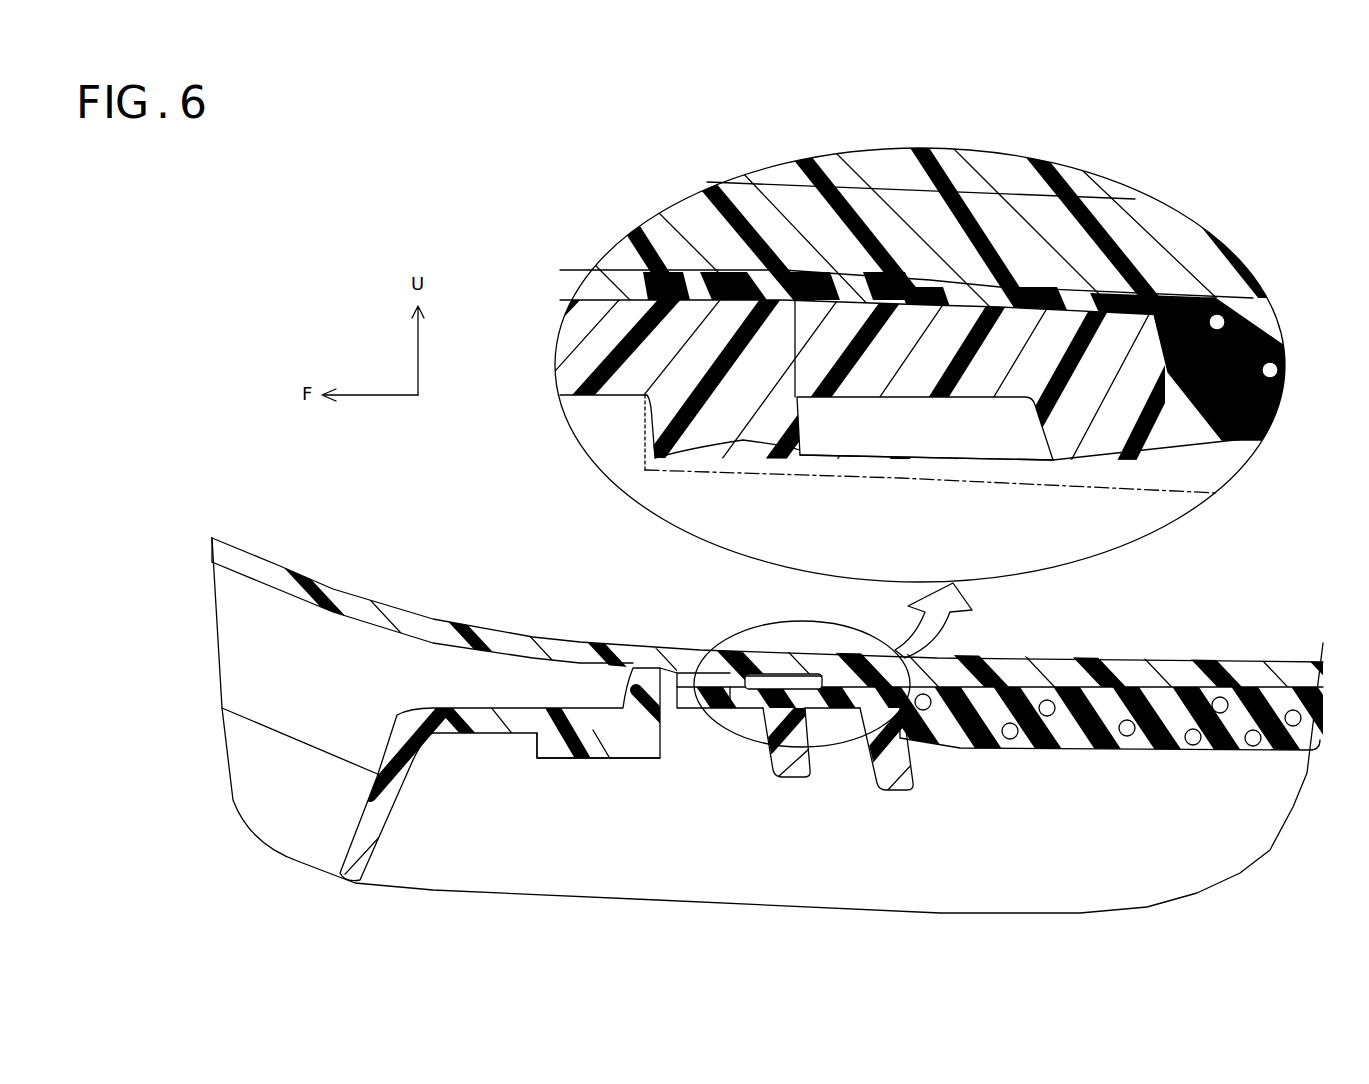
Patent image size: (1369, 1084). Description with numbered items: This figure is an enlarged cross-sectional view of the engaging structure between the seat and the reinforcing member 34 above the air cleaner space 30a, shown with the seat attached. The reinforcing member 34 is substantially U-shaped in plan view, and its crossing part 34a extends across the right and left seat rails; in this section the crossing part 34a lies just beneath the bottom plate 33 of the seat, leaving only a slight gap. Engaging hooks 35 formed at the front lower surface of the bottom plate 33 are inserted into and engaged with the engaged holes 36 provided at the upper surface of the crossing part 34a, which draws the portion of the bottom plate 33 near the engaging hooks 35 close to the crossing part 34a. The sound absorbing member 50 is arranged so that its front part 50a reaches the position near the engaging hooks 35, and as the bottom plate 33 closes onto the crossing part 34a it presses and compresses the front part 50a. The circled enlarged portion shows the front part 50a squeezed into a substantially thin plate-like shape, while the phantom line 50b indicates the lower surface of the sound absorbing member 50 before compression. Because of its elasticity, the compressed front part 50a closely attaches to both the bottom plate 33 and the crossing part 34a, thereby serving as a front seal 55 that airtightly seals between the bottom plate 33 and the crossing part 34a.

The air cleaner space 30a is at (1025, 839).
The bottom plate 33 is at (360, 603).
The reinforcing member 34 is at (373, 812).
The crossing part 34a is at (745, 650).
The engaging hooks 35 is at (590, 762).
The engaged holes 36 is at (683, 715).
The sound absorbing member 50 is at (1157, 700).
The front part 50a is at (899, 565).
The phantom line 50b is at (783, 473).
The front seal 55 is at (778, 690).